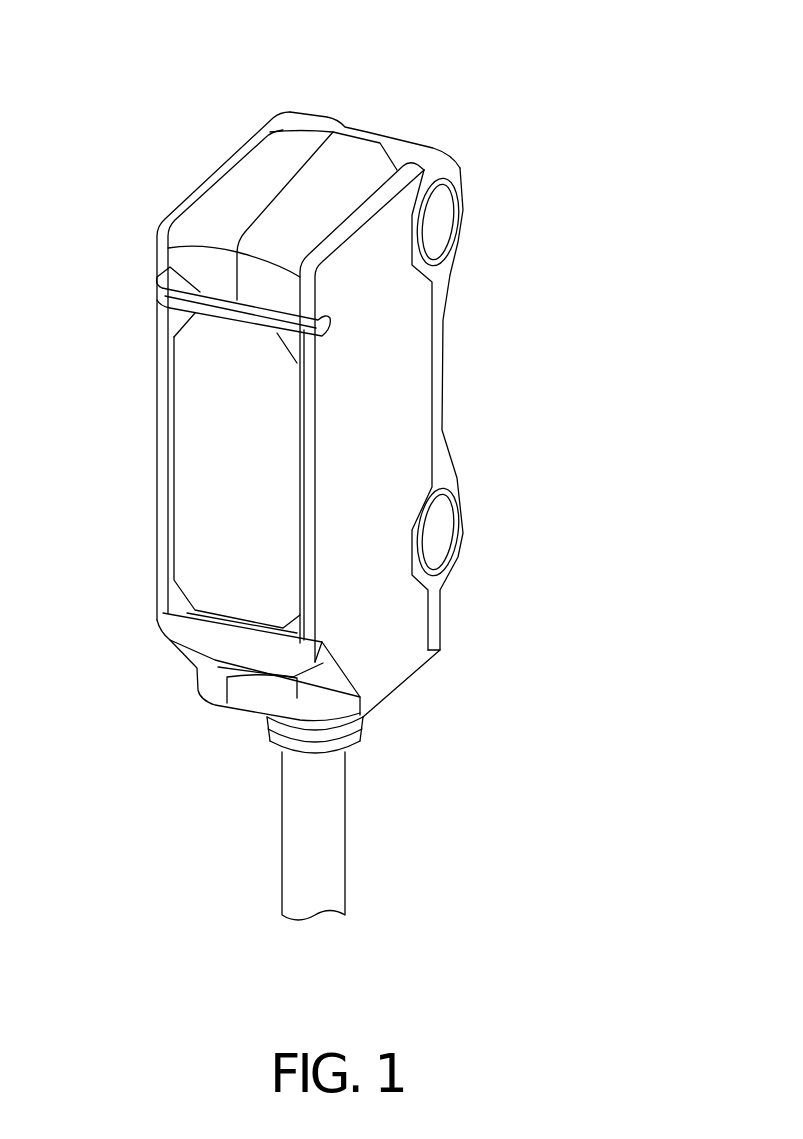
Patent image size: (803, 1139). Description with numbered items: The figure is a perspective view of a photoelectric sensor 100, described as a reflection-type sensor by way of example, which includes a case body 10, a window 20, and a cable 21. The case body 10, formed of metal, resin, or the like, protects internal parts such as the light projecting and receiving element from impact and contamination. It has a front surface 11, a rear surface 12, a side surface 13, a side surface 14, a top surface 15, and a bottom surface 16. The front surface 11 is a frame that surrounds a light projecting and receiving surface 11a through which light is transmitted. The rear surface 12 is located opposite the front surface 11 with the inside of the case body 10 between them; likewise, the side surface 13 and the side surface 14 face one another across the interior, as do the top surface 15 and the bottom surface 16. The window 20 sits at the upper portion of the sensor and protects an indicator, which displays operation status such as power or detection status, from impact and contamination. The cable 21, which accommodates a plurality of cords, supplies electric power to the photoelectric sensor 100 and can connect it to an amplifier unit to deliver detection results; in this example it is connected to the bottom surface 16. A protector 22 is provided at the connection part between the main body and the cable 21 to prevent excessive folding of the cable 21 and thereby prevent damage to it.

The photoelectric sensor 100 is at (650, 42).
The case body 10 is at (462, 150).
The front surface 11 is at (205, 640).
The light projecting and receiving surface 11a is at (240, 497).
The rear surface 12 is at (443, 350).
The side surface 13 is at (400, 425).
The side surface 14 is at (157, 410).
The top surface 15 is at (403, 148).
The bottom surface 16 is at (390, 697).
The window 20 is at (217, 208).
The cable 21 is at (282, 868).
The protector 22 is at (265, 743).